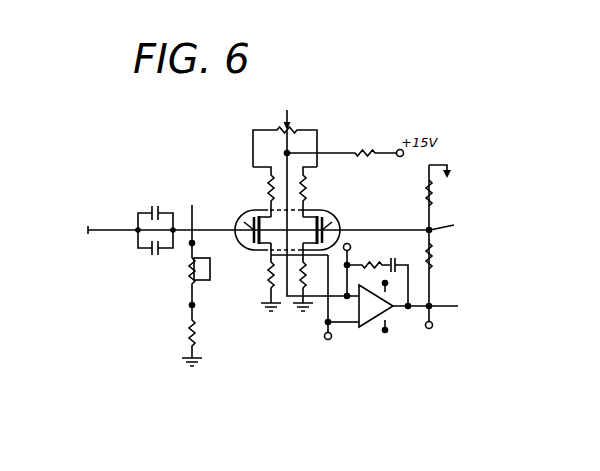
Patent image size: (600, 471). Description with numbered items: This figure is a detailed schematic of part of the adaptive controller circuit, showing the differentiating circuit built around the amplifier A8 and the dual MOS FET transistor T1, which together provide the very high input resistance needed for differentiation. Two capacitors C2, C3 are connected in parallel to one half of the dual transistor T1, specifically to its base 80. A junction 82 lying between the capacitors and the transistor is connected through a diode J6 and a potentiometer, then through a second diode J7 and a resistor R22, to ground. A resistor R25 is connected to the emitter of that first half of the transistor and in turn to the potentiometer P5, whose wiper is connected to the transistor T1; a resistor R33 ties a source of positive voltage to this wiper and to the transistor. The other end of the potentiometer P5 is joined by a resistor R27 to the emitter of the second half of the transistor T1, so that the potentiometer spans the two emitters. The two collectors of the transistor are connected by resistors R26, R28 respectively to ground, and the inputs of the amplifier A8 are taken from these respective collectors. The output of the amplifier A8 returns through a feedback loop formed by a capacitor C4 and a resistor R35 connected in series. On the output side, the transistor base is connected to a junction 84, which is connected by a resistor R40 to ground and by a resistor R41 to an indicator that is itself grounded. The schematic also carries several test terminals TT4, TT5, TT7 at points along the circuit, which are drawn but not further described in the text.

The capacitor C2 is at (156, 206).
The capacitor C3 is at (153, 256).
The junction 82 is at (193, 222).
The diode J6 is at (195, 243).
The diode J7 is at (195, 305).
The resistor R22 is at (188, 335).
The potentiometer P5 is at (285, 131).
The resistor R33 is at (345, 140).
The resistor R25 is at (269, 186).
The resistor R27 is at (307, 187).
The base 80 is at (237, 224).
The MOS FET transistor T1 is at (318, 212).
The resistor R26 is at (269, 274).
The resistor R28 is at (306, 281).
The test terminal TT4 is at (331, 339).
The test terminal TT5 is at (349, 243).
The resistor R35 is at (368, 252).
The capacitor C4 is at (395, 271).
The amplifier A8 is at (382, 310).
The resistor R40 is at (427, 190).
The resistor R41 is at (433, 255).
The junction 84 is at (456, 227).
The test terminal TT7 is at (431, 328).